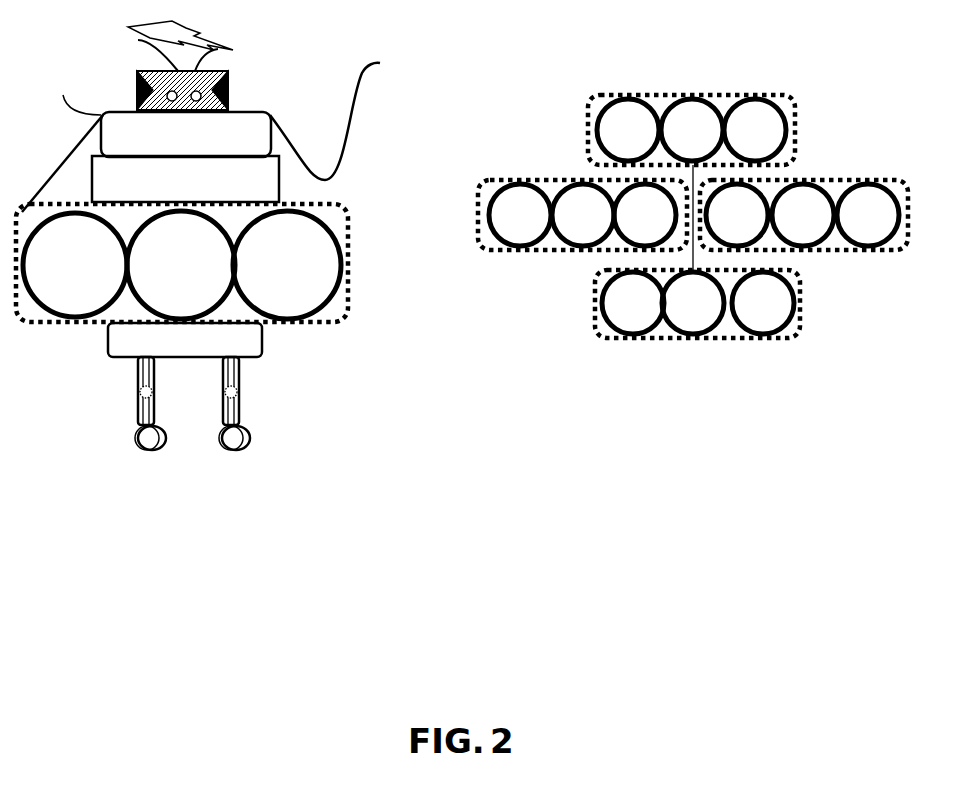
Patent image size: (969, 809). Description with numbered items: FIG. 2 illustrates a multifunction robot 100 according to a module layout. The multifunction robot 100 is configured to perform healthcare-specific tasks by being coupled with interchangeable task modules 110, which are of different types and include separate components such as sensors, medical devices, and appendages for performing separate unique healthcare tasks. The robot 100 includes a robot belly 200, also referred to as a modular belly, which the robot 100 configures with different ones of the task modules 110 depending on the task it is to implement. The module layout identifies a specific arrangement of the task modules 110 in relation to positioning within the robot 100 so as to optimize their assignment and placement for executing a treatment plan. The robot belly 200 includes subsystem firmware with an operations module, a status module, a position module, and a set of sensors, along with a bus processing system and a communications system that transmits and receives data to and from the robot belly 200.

The multifunction robot 100 is at (201, 235).
The task modules 110 is at (907, 338).
The robot belly 200 is at (345, 263).